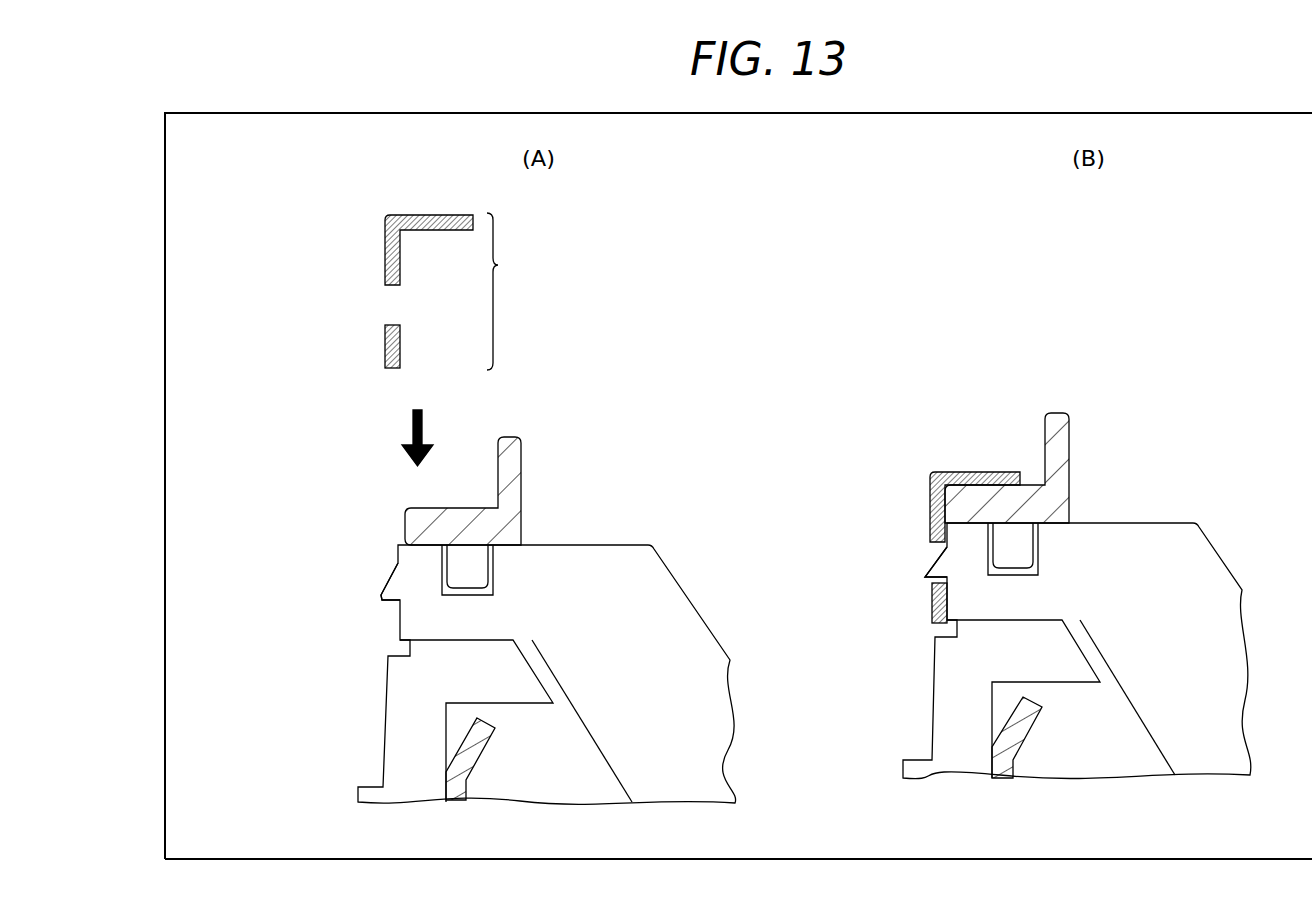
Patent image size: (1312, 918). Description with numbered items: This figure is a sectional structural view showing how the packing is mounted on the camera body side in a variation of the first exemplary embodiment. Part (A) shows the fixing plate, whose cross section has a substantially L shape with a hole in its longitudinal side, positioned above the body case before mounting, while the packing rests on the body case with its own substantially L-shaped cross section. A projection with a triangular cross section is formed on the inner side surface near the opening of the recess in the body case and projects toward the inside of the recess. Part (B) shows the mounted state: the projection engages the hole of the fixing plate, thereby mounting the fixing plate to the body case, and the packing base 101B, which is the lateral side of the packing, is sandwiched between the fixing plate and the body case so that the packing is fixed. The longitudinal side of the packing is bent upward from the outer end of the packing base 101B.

The packing base 101B is at (993, 495).